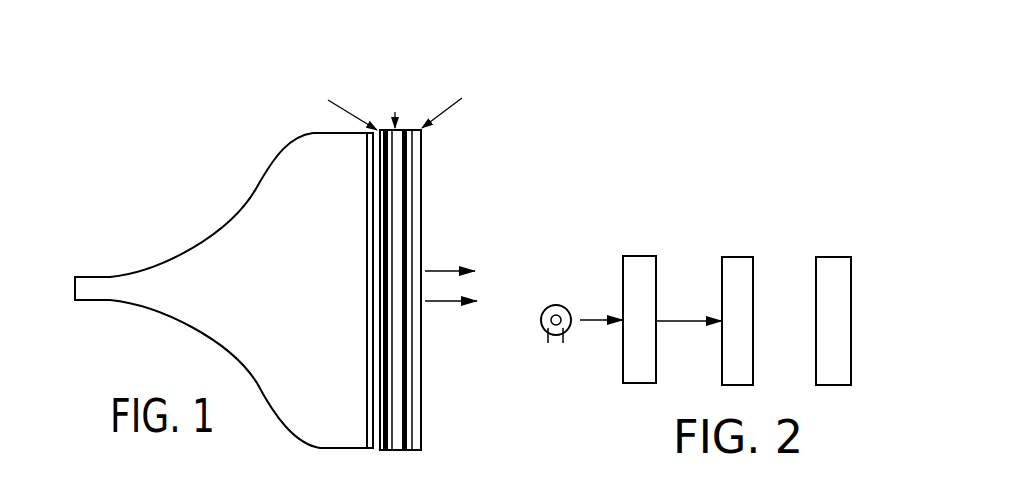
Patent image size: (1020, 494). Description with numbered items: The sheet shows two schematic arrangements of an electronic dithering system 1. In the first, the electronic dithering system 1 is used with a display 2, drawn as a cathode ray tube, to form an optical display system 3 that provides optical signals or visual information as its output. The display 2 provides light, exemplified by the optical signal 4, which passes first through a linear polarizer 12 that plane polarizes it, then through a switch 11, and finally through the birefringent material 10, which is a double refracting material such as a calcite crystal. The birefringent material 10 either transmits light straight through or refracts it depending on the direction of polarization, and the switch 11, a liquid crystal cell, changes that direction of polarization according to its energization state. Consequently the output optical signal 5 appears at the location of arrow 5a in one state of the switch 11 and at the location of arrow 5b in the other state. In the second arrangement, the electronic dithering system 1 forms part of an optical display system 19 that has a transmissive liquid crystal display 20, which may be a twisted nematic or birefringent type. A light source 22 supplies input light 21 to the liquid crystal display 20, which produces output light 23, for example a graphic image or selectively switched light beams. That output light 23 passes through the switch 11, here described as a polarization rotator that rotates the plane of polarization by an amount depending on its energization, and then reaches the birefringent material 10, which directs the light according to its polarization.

In FIG. 1, the electronic dithering system 1 is at (393, 62).
In FIG. 2, the electronic dithering system 1 is at (810, 210).
In FIG. 1, the display 2 is at (255, 188).
In FIG. 1, the optical display system 3 is at (337, 52).
In FIG. 1, the optical signal 4 is at (378, 288).
In FIG. 1, the output optical signal 5 is at (492, 292).
In FIG. 1, the arrow 5a is at (442, 303).
In FIG. 1, the arrow 5b is at (442, 270).
In FIG. 1, the birefringent material 10 is at (421, 143).
In FIG. 2, the birefringent material 10 is at (850, 257).
In FIG. 1, the switch 11 is at (422, 128).
In FIG. 2, the switch 11 is at (735, 257).
In FIG. 1, the linear polarizer 12 is at (378, 128).
In FIG. 2, the optical display system 19 is at (713, 238).
In FIG. 2, the transmissive liquid crystal display 20 is at (652, 256).
In FIG. 2, the input light 21 is at (597, 317).
In FIG. 2, the light source 22 is at (552, 305).
In FIG. 2, the output light 23 is at (697, 296).